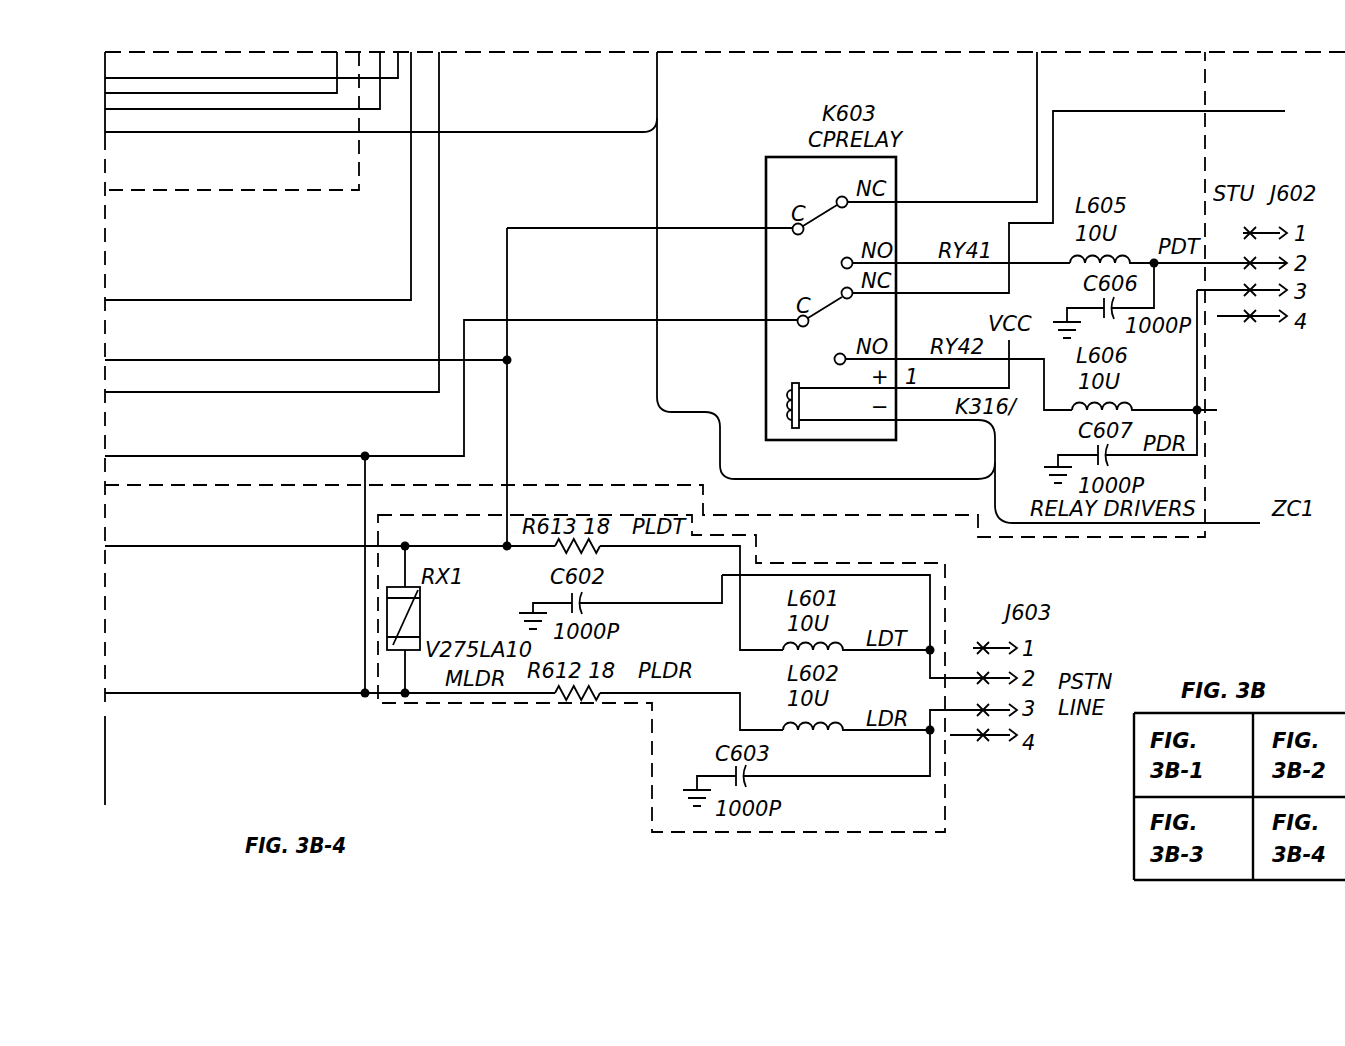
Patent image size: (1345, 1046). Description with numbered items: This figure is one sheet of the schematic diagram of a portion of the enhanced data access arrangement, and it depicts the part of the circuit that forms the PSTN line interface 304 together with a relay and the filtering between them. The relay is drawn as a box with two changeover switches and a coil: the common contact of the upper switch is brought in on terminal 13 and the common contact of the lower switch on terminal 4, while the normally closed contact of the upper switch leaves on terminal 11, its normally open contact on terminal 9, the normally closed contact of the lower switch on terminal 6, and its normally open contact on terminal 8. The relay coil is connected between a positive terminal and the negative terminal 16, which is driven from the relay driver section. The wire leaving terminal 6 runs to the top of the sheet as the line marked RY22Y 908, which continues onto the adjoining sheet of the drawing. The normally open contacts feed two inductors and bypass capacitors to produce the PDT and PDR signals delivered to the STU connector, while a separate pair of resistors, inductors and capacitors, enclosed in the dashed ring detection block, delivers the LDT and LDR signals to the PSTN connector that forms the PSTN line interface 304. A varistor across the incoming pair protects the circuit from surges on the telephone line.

The PSTN line interface 304 is at (947, 770).
The RY22Y relay signal line 908 is at (1245, 89).
The relay K603 pin 13 common contact 13 is at (649, 375).
The relay K603 pin 4 common contact 4 is at (451, 376).
The relay K603 pin 11 normally closed contact 11 is at (942, 127).
The relay K603 pin 9 normally open contact RY41 9 is at (961, 251).
The relay K603 pin 6 normally closed contact 6 is at (1069, 202).
The relay K603 pin 8 normally open contact RY42 8 is at (959, 372).
The relay K603 pin 16 coil terminal 16 is at (1029, 459).